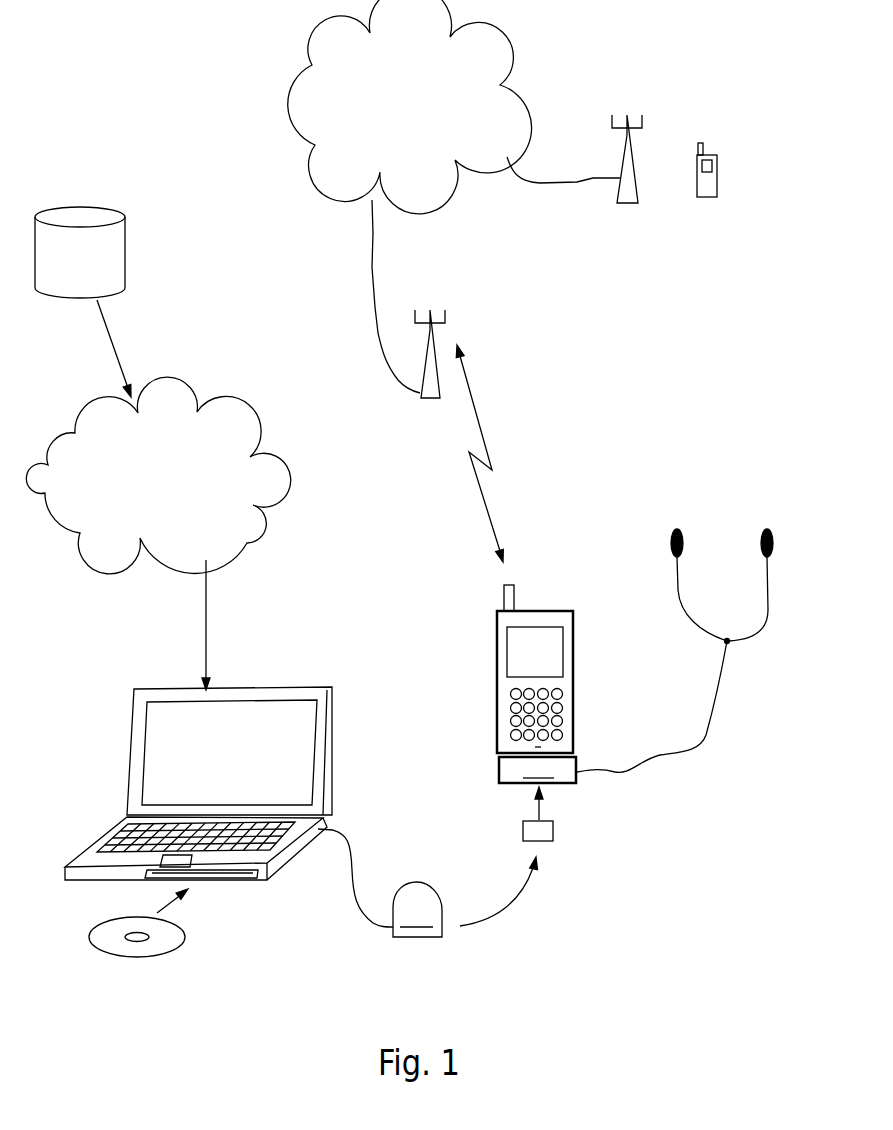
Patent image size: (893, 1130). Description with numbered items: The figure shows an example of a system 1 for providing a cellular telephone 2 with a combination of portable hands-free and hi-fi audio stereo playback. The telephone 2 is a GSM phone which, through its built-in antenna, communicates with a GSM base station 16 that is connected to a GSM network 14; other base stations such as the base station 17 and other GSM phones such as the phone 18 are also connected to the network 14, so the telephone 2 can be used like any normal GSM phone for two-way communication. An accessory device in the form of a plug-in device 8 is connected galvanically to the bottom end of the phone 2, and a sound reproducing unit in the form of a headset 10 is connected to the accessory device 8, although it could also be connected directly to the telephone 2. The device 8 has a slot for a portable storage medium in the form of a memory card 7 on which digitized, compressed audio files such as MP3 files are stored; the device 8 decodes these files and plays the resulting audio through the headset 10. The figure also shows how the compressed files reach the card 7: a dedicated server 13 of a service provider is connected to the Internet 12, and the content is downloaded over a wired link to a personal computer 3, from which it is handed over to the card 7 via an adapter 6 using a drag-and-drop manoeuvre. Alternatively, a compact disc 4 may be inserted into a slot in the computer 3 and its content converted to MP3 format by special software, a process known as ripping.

The system 1 is at (667, 964).
The cellular telephone 2 is at (573, 688).
The personal computer 3 is at (138, 750).
The compact disc 4 is at (143, 950).
The adapter 6 is at (423, 933).
The memory card 7 is at (548, 840).
The plug-in device 8 is at (505, 770).
The headset 10 is at (716, 525).
The Internet 12 is at (247, 543).
The server 13 is at (80, 217).
The GSM network 14 is at (492, 62).
The GSM base station 16 is at (425, 408).
The base station 17 is at (622, 211).
The phone 18 is at (708, 190).